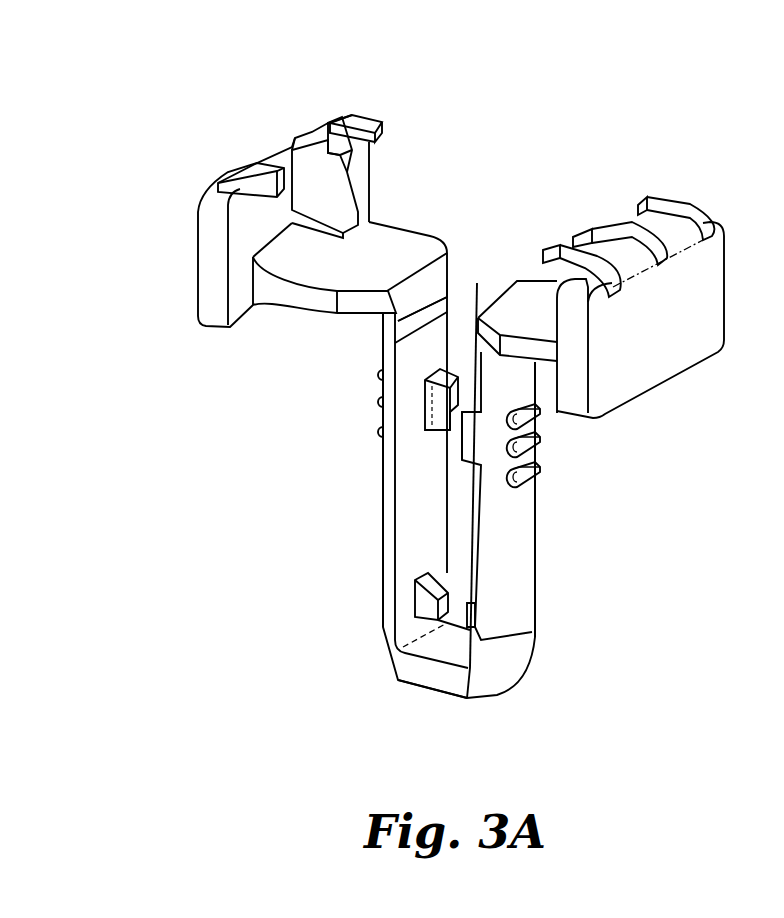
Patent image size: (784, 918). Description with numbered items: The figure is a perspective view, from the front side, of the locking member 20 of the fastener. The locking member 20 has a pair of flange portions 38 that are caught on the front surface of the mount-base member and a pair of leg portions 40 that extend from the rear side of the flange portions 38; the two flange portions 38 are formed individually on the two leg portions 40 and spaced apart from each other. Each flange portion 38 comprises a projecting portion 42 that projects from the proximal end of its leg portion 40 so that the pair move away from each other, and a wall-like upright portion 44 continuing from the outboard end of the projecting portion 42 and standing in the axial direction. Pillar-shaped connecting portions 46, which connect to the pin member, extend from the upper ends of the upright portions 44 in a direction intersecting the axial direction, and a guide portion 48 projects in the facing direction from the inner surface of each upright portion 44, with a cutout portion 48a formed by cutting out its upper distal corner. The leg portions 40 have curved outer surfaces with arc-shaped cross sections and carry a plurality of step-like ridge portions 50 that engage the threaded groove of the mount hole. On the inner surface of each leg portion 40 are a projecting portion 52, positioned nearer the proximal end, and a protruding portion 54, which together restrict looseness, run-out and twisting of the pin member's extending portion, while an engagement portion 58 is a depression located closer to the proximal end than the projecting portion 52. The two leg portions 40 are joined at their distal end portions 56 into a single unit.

The locking member 20 is at (532, 738).
The flange portion 38 is at (300, 293).
The leg portion 40 is at (390, 488).
The projecting portion 42 is at (407, 240).
The upright portion 44 is at (203, 261).
The connecting portion 46 is at (265, 172).
The guide portion 48 is at (307, 177).
The cutout portion 48a is at (340, 155).
The ridge portion 50 is at (379, 376).
The projecting portion 52 is at (440, 398).
The protruding portion 54 is at (423, 600).
The distal end portion 56 is at (425, 677).
The engagement portion 58 is at (437, 307).